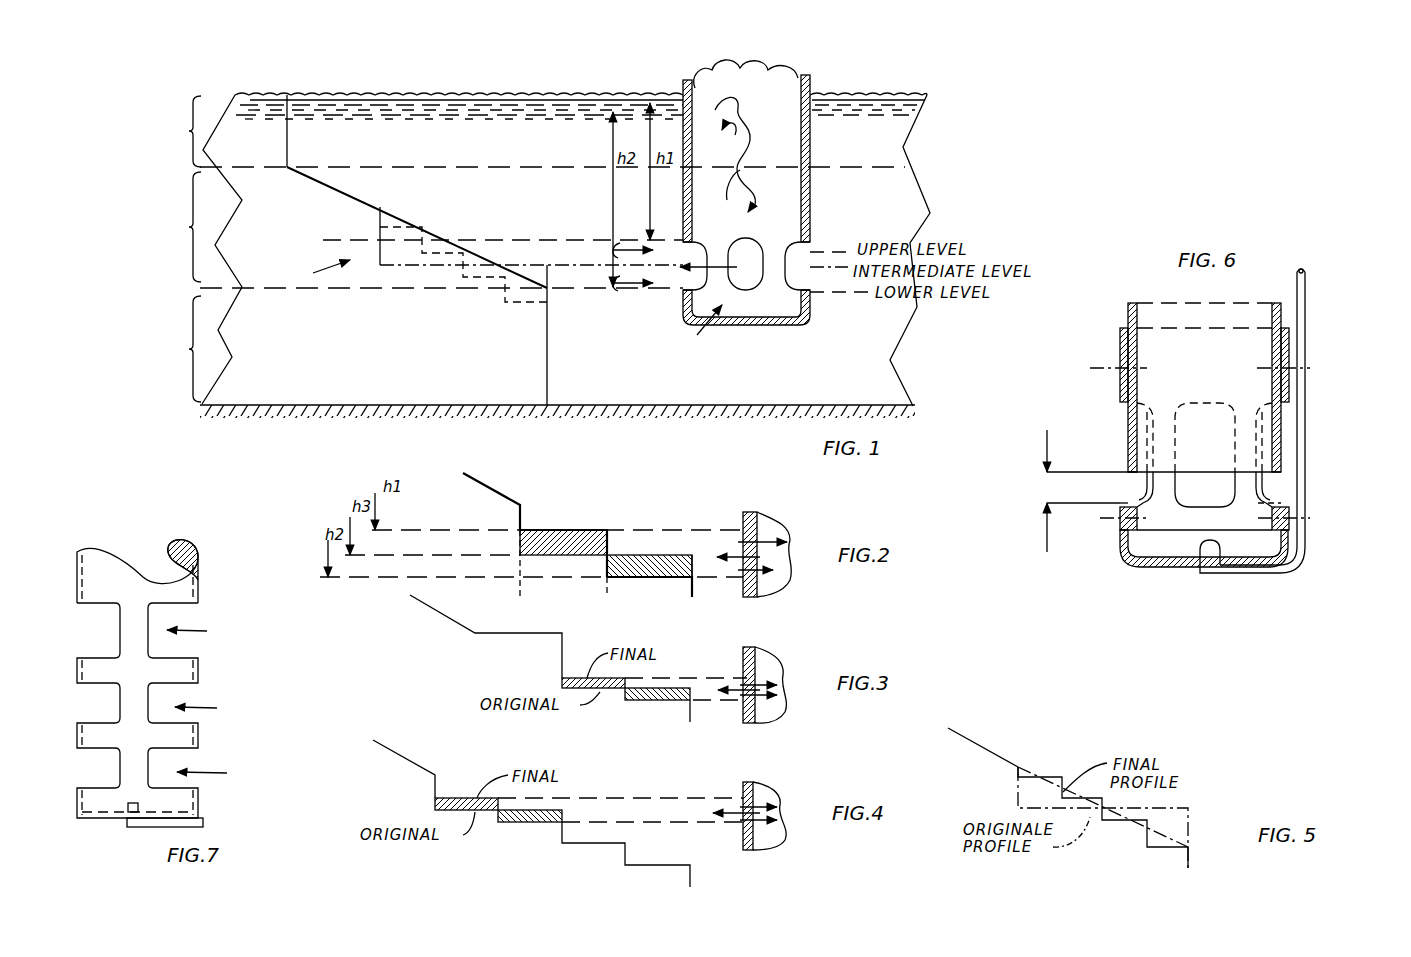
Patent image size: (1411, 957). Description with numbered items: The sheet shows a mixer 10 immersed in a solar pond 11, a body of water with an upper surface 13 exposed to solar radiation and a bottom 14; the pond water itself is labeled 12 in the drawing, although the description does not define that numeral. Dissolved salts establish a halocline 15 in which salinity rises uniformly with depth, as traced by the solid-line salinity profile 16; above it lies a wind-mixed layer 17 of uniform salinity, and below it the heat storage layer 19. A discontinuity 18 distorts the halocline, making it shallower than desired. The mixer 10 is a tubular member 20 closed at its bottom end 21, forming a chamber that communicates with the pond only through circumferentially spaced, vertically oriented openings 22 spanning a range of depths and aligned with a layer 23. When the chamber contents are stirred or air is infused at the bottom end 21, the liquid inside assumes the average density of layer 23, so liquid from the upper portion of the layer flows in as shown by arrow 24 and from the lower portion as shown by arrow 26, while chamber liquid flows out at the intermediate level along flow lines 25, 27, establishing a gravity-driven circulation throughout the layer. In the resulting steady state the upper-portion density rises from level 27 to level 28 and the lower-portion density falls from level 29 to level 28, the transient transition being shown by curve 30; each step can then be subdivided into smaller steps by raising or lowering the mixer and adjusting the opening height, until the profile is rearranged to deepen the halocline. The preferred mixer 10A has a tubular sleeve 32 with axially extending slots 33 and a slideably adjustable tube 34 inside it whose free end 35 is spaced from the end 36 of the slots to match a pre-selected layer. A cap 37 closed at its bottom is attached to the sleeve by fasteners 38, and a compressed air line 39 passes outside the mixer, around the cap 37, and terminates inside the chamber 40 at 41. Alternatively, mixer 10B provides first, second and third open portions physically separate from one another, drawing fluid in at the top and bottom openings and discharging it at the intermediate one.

In FIG. 1, the mixer 10 is at (801, 208).
In FIG. 6, the mixer 10A is at (1200, 426).
In FIG. 7, the mixer 10B is at (203, 683).
In FIG. 1, the solar pond 11 is at (903, 97).
In FIG. 1, the water surface layer 12 is at (548, 113).
In FIG. 1, the upper surface 13 is at (460, 95).
In FIG. 1, the bottom 14 is at (883, 408).
In FIG. 1, the halocline 15 is at (252, 253).
In FIG. 1, the salinity profile 16 is at (380, 207).
In FIG. 1, the wind-mixed layer 17 is at (252, 122).
In FIG. 1, the discontinuity 18 is at (397, 268).
In FIG. 2, the discontinuity 18 is at (630, 553).
In FIG. 1, the heat storage layer 19 is at (257, 380).
In FIG. 1, the tubular member 20 is at (805, 223).
In FIG. 1, the bottom end 21 is at (773, 323).
In FIG. 1, the openings 22 is at (747, 248).
In FIG. 1, the layer 23 is at (316, 267).
In FIG. 2, the layer 23 is at (712, 553).
In FIG. 1, the arrow 24 is at (722, 232).
In FIG. 1, the flow line 25 is at (627, 245).
In FIG. 1, the arrow 26 is at (697, 335).
In FIG. 1, the level 27 is at (640, 283).
In FIG. 2, the level 27 is at (521, 574).
In FIG. 2, the level 28 is at (606, 598).
In FIG. 2, the level 29 is at (691, 587).
In FIG. 2, the curve 30 is at (547, 540).
In FIG. 6, the tubular sleeve 32 is at (1287, 322).
In FIG. 6, the slots 33 is at (1192, 423).
In FIG. 6, the slideably adjustable tube 34 is at (1153, 313).
In FIG. 6, the free end 35 is at (1133, 477).
In FIG. 6, the end 36 is at (1120, 497).
In FIG. 6, the cap 37 is at (1167, 565).
In FIG. 6, the fasteners 38 is at (1293, 512).
In FIG. 6, the compressed air line 39 is at (1277, 426).
In FIG. 7, the compressed air line 39 is at (203, 817).
In FIG. 6, the chamber 40 is at (1150, 540).
In FIG. 6, the air line termination 41 is at (1213, 567).